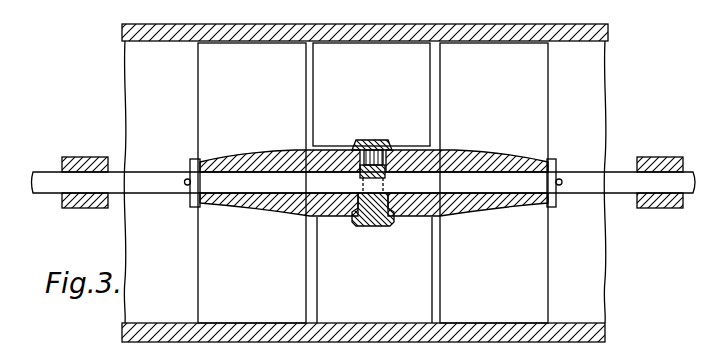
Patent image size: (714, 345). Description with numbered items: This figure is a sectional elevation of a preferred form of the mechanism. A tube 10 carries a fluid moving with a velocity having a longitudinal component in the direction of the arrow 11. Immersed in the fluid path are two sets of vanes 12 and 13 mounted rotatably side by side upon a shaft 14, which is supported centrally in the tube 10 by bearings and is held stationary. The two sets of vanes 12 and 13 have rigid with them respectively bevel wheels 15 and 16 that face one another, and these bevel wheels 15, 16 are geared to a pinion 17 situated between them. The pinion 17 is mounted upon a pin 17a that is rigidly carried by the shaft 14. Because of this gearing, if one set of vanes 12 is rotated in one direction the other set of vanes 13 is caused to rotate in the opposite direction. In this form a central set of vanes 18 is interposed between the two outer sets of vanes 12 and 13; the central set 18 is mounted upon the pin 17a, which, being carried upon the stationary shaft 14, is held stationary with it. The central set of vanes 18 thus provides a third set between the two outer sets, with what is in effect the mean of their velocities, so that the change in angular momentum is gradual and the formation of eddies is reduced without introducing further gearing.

The tube 10 is at (593, 32).
The arrow 11 is at (112, 88).
The set of vanes 12 is at (256, 105).
The set of vanes 13 is at (496, 101).
The shaft 14 is at (155, 190).
The bevel wheel 15 is at (356, 150).
The bevel wheel 16 is at (420, 143).
The pinion 17 is at (372, 146).
The pin 17a is at (377, 146).
The central set of vanes 18 is at (371, 101).